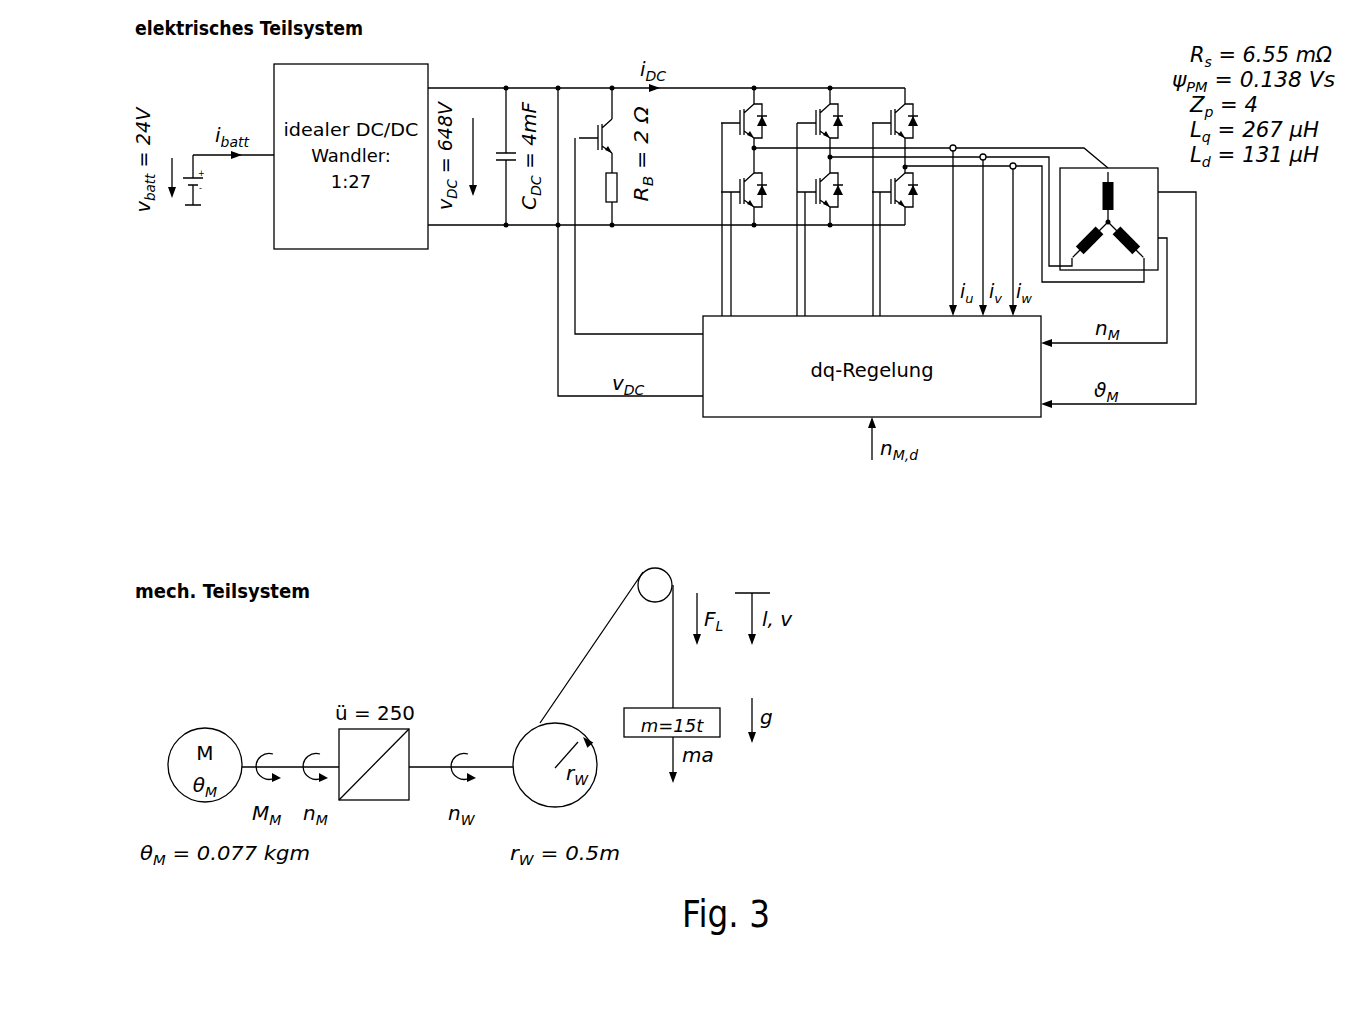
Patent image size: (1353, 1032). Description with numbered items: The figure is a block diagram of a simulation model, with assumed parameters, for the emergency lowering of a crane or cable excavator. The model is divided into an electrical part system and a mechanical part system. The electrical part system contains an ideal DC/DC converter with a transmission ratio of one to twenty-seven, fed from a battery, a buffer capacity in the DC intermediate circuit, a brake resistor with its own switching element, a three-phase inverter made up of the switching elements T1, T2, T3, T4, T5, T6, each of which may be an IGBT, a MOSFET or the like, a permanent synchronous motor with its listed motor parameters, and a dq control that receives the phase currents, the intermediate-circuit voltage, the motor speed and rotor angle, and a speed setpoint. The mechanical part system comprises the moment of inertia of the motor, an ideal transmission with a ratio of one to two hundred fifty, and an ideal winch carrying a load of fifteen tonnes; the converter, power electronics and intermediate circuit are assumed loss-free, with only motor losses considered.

The switching element T1 is at (759, 202).
The switching element T2 is at (835, 202).
The switching element T3 is at (910, 202).
The switching element T4 is at (759, 244).
The switching element T5 is at (835, 244).
The switching element T6 is at (910, 244).